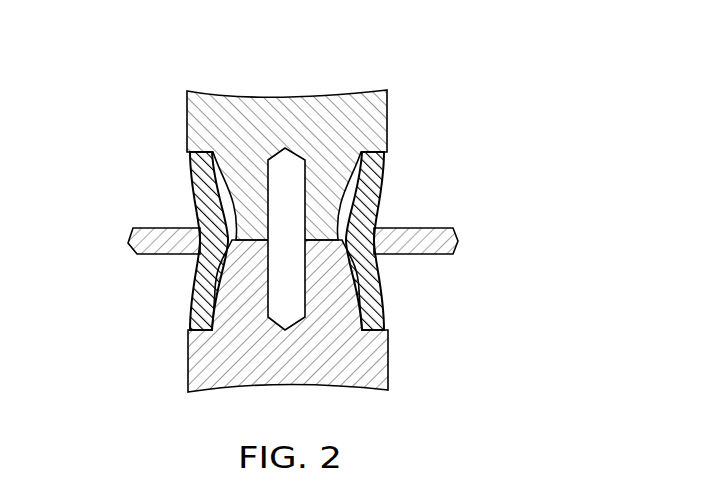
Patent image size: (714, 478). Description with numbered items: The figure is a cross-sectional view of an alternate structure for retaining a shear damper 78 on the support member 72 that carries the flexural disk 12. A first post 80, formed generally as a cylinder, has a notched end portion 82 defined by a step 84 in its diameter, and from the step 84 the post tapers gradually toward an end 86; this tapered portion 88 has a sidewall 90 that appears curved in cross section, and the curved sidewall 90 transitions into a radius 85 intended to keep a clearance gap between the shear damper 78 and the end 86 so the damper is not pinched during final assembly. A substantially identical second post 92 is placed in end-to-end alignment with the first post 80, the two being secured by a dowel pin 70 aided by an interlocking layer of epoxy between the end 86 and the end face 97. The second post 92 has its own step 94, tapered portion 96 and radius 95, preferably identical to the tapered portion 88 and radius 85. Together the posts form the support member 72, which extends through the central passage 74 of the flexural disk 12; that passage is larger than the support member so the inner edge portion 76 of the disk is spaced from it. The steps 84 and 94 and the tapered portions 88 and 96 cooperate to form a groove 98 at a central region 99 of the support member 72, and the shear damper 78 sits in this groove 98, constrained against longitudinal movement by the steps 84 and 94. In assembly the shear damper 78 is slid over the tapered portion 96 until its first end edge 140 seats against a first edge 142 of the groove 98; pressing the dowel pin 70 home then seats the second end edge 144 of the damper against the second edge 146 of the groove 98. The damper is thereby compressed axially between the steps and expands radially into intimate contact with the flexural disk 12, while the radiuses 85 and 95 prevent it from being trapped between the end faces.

The flexural disk 12 is at (143, 256).
The dowel pin 70 is at (240, 198).
The support member 72 is at (403, 117).
The central passage 74 is at (384, 266).
The inner edge portion 76 is at (380, 224).
The shear damper 78 is at (153, 212).
The first post 80 is at (388, 100).
The notched end portion 82 is at (381, 176).
The step 84 is at (385, 159).
The radius 85 is at (240, 198).
The end 86 is at (334, 198).
The tapered portion 88 is at (381, 188).
The sidewall 90 is at (334, 198).
The second post 92 is at (188, 374).
The step 94 is at (386, 318).
The radius 95 is at (242, 242).
The tapered portion 96 is at (381, 295).
The end face 97 is at (340, 273).
The groove 98 is at (113, 312).
The central region 99 is at (413, 197).
The first end edge 140 is at (202, 330).
The first edge 142 is at (192, 327).
The second end edge 144 is at (188, 143).
The second edge 146 is at (192, 153).